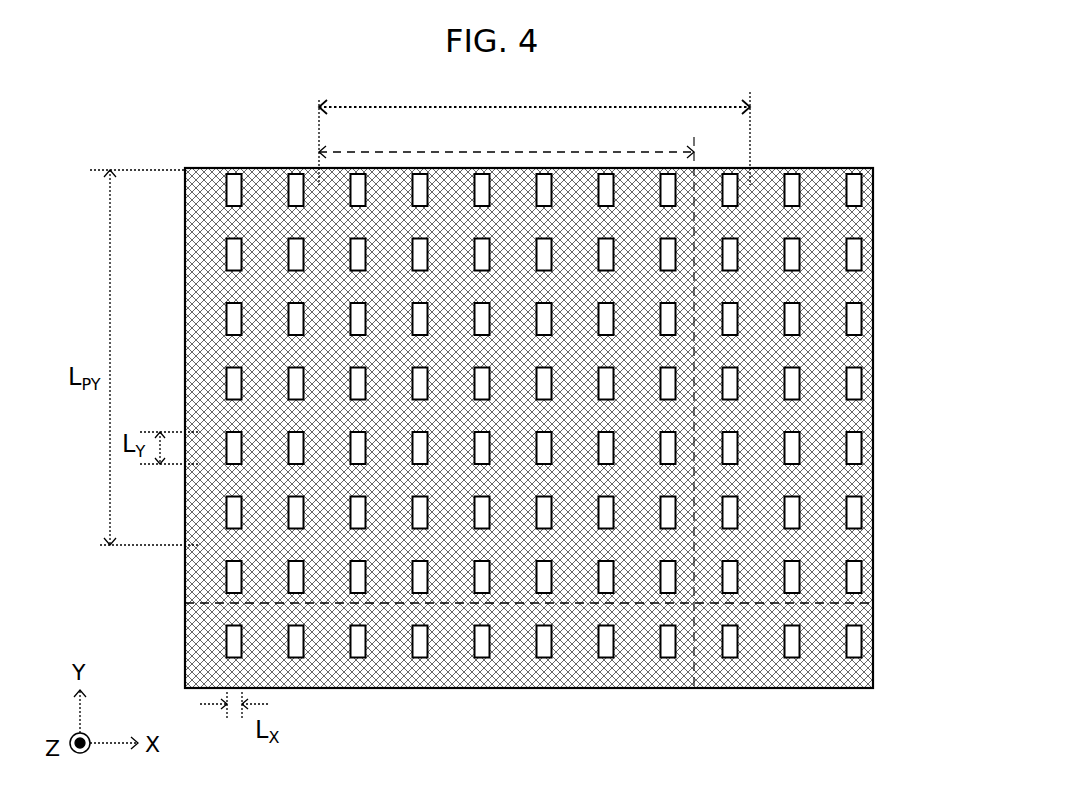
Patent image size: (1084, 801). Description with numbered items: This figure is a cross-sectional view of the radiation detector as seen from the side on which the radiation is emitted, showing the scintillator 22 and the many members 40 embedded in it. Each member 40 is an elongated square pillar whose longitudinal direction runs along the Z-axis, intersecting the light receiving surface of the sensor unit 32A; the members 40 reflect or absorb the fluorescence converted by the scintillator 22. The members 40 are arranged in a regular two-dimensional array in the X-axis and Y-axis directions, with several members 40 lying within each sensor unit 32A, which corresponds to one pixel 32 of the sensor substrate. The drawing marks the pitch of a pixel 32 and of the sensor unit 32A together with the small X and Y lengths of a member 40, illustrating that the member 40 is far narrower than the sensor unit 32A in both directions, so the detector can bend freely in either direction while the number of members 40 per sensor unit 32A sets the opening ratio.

The scintillator 22 is at (862, 290).
The pixel 32 is at (534, 132).
The sensor unit 32A is at (912, 482).
The member 40 is at (852, 193).